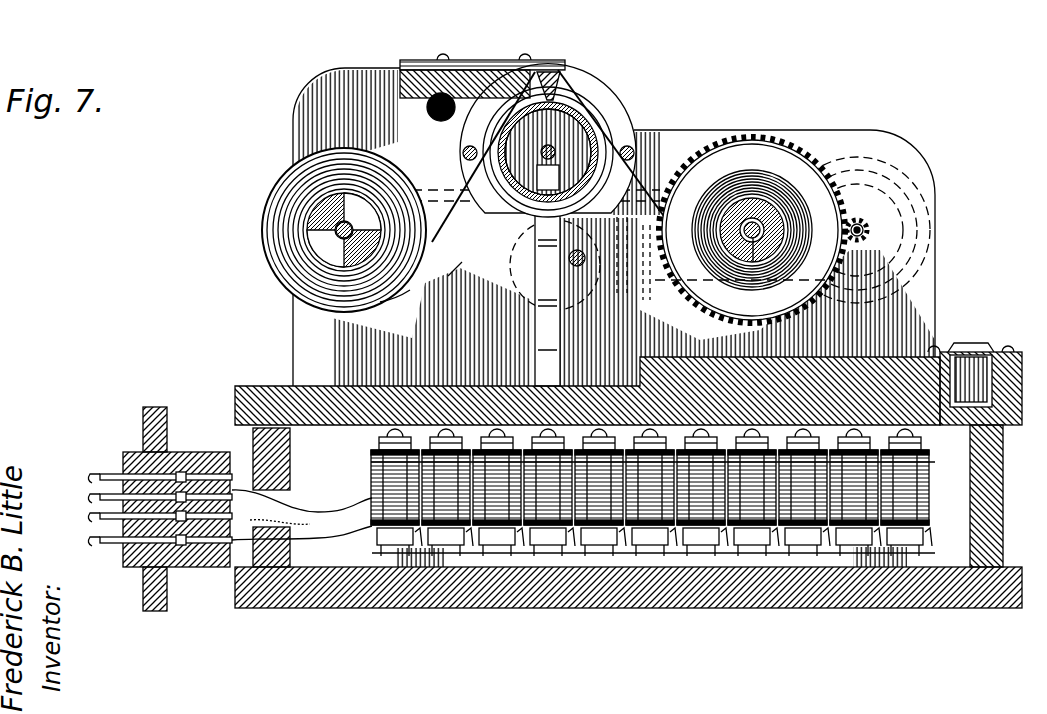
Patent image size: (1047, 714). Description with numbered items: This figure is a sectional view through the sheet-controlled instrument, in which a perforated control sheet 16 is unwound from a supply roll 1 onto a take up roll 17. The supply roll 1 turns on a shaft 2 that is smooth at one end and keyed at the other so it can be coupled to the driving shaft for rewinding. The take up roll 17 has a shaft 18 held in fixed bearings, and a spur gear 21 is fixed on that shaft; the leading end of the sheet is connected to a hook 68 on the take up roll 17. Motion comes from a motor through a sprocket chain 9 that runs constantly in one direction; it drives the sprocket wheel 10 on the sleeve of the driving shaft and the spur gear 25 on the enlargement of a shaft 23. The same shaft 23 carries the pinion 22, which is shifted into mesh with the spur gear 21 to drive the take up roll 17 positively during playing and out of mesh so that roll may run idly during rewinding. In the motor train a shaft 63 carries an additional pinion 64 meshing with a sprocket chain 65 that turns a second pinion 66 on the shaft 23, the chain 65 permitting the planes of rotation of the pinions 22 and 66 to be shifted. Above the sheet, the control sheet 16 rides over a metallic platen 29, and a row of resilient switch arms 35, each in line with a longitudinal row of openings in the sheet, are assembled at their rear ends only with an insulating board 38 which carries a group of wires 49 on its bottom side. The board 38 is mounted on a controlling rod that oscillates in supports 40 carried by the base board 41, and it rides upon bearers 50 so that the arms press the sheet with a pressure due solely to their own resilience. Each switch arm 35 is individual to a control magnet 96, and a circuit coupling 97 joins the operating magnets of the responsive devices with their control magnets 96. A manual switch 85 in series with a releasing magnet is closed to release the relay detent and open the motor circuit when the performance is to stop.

The supply roll 1 is at (335, 228).
The shaft 2 is at (336, 248).
The sprocket chain 9 is at (457, 270).
The sprocket wheel 10 is at (393, 307).
The control sheet 16 is at (447, 213).
The take up roll 17 is at (758, 215).
The shaft 18 is at (753, 262).
The spur gear 21 is at (795, 158).
The pinion 22 is at (870, 217).
The shaft 23 is at (868, 230).
The spur gear 25 is at (872, 167).
The platen 29 is at (580, 108).
The switch arm 35 is at (556, 92).
The insulating board 38 is at (477, 72).
The supports 40 is at (343, 78).
The base board 41 is at (451, 390).
The group of wires 49 is at (428, 117).
The bearers 50 is at (485, 127).
The shaft 63 is at (572, 262).
The additional pinion 64 is at (605, 284).
The sprocket chain 65 is at (644, 286).
The second pinion 66 is at (918, 177).
The hook 68 is at (723, 185).
The manual switch 85 is at (974, 343).
The control magnets 96 is at (375, 500).
The circuit coupling 97 is at (117, 473).